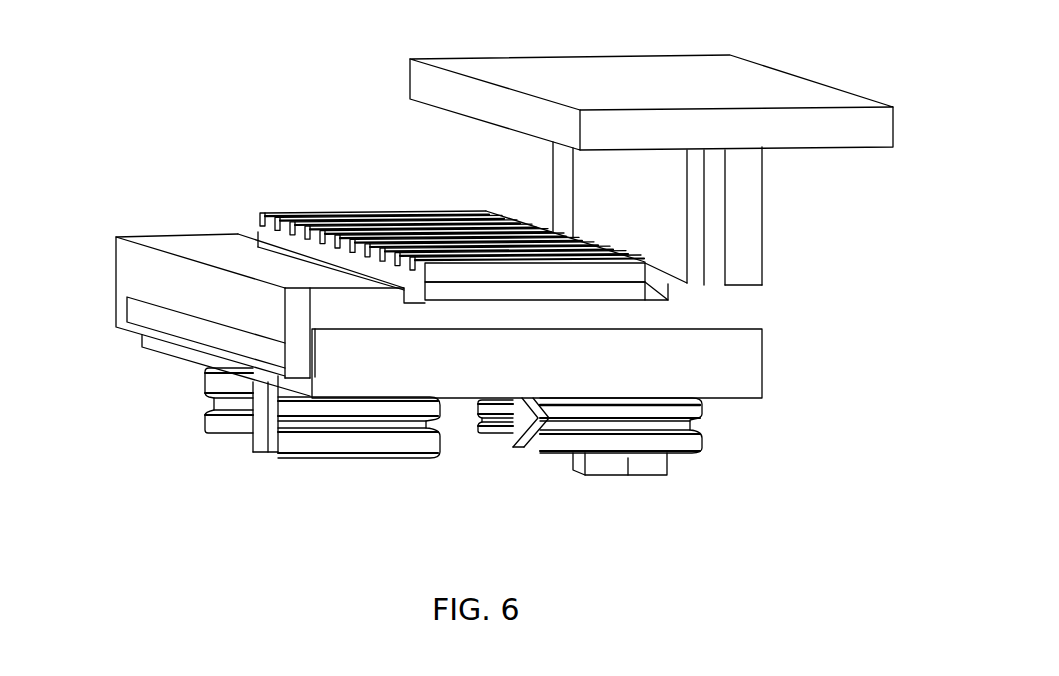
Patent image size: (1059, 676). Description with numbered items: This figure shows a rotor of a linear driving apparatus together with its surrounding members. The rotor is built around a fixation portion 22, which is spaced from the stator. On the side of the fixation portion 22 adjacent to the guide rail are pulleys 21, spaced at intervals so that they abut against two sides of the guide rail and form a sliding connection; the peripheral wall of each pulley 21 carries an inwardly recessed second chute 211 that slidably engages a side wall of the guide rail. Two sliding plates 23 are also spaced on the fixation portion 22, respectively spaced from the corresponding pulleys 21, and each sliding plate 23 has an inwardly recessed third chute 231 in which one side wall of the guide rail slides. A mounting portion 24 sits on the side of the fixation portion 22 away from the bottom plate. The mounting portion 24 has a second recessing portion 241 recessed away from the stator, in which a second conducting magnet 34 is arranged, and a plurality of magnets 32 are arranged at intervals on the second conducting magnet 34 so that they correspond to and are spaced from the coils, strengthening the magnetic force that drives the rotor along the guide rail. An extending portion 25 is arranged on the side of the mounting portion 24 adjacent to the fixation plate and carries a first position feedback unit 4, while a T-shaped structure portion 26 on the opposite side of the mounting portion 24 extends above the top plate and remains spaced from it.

The first position feedback unit 4 is at (137, 313).
The pulley 21 is at (687, 467).
The second chute 211 is at (708, 430).
The fixation portion 22 is at (733, 365).
The sliding plate 23 is at (262, 444).
The third chute 231 is at (517, 448).
The mounting portion 24 is at (732, 310).
The second recessing portion 241 is at (655, 292).
The extending portion 25 is at (137, 273).
The T-shaped structure portion 26 is at (742, 200).
The magnet 32 is at (280, 217).
The second conducting magnet 34 is at (257, 233).